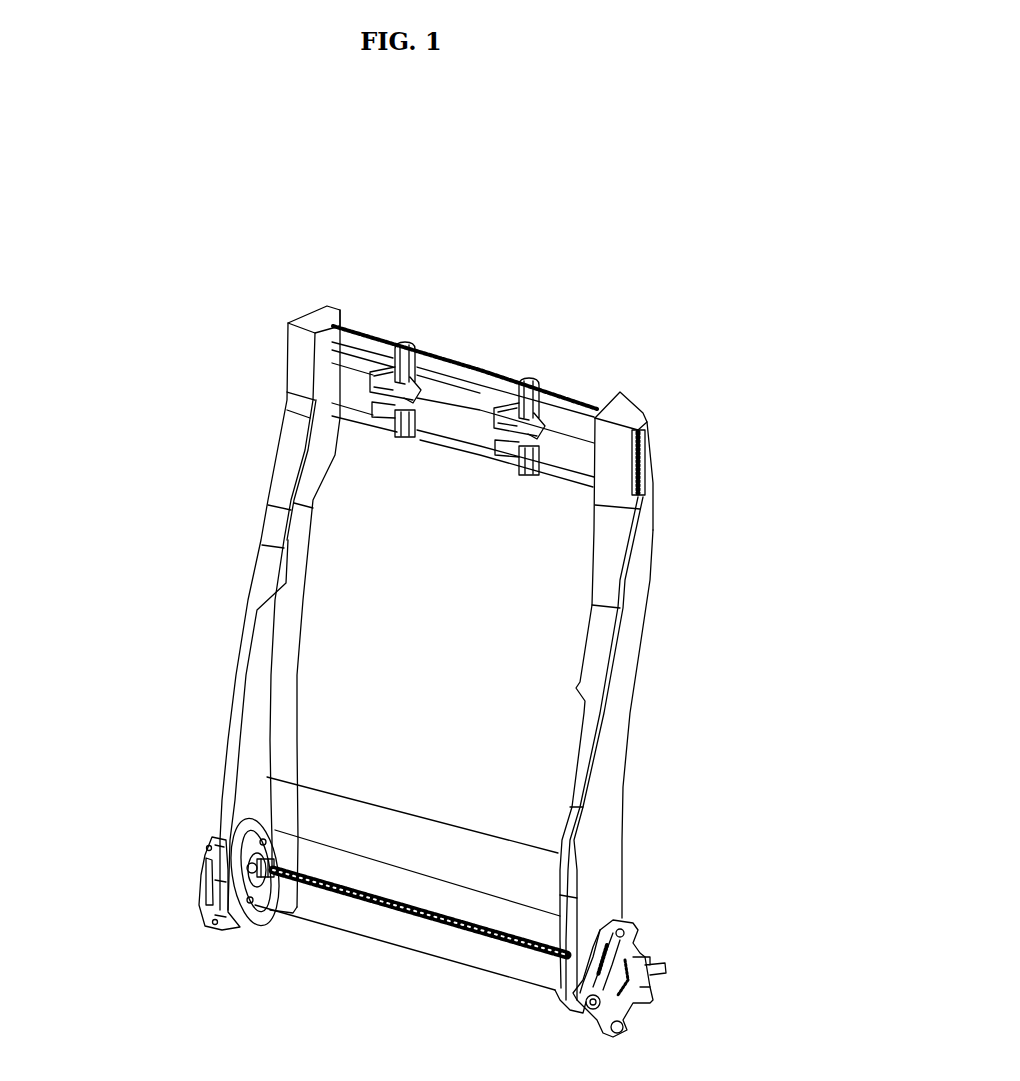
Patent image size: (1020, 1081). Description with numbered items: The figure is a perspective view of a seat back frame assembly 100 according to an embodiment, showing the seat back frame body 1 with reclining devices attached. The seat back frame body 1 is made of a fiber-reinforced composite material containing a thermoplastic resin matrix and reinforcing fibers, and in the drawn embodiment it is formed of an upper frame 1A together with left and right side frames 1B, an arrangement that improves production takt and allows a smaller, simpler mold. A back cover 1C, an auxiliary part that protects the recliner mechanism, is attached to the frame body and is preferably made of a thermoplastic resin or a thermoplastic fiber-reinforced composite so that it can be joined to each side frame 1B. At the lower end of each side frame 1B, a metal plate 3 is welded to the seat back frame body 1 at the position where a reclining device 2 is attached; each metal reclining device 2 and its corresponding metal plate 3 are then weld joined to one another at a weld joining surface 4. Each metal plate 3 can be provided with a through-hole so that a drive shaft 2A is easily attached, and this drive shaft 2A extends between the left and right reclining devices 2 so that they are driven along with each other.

The seat back frame assembly 100 is at (641, 288).
The seat back frame body 1 is at (688, 408).
The upper frame 1A is at (450, 407).
The side frame 1B is at (280, 489).
The back cover 1C is at (345, 808).
The reclining device 2 is at (197, 888).
The drive shaft 2A is at (390, 904).
The metal plate 3 is at (232, 856).
The weld joining surface 4 is at (237, 840).